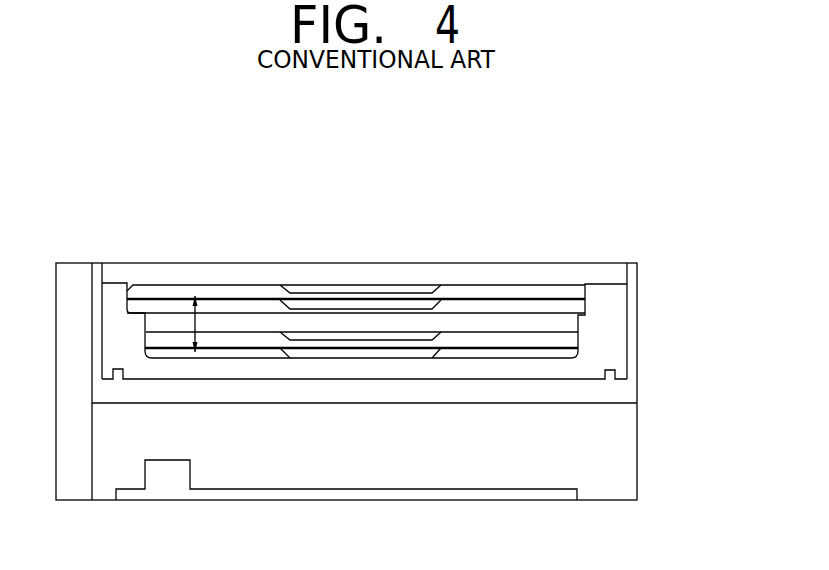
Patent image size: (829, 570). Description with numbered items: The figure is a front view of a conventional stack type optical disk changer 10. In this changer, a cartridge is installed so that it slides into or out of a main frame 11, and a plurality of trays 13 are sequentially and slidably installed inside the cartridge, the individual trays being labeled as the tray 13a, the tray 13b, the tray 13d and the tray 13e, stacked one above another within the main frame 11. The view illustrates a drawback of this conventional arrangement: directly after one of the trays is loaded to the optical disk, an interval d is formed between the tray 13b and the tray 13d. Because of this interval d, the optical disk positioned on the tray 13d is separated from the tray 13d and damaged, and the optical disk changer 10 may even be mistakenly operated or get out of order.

The stack type optical disk changer 10 is at (342, 208).
The main frame 11 is at (622, 388).
The trays 13 is at (577, 192).
The tray 13a is at (447, 285).
The tray 13b is at (487, 307).
The tray 13d is at (528, 343).
The tray 13e is at (567, 355).
The interval d is at (193, 320).